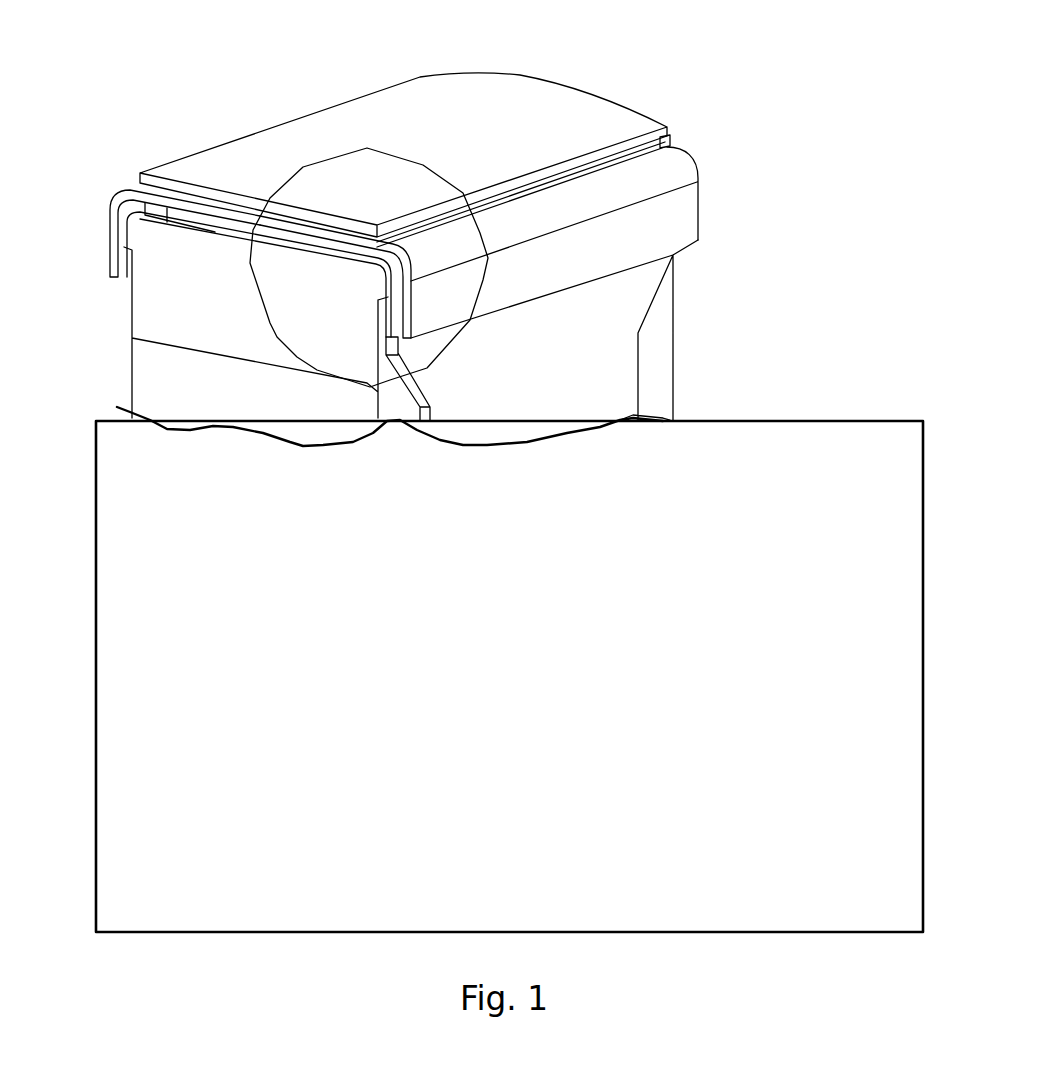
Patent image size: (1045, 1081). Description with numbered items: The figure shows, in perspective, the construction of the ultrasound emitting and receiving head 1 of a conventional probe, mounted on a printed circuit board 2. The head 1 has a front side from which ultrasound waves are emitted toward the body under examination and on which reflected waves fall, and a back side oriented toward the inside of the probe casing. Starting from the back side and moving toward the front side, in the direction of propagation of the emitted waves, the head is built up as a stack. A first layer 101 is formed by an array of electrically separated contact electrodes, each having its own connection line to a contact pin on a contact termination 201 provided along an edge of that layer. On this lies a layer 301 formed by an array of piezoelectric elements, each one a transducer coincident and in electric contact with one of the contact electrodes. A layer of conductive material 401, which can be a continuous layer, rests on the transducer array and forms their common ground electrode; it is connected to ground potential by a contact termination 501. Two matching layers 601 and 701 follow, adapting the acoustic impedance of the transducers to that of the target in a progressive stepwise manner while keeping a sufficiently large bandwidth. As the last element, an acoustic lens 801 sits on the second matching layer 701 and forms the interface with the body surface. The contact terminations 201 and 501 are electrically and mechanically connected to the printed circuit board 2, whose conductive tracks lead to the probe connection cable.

The ultrasound wave emitting and receiving head 1 is at (276, 127).
The printed circuit board 2 is at (607, 362).
The first layer of contact electrodes 101 is at (220, 230).
The contact termination of the contact electrode layer 201 is at (402, 278).
The layer of piezoelectric elements 301 is at (193, 217).
The layer of conductive material 401 is at (135, 195).
The contact termination of the ground layer 501 is at (680, 217).
The first matching layer 601 is at (657, 145).
The second matching layer 701 is at (633, 145).
The acoustic lens 801 is at (390, 122).